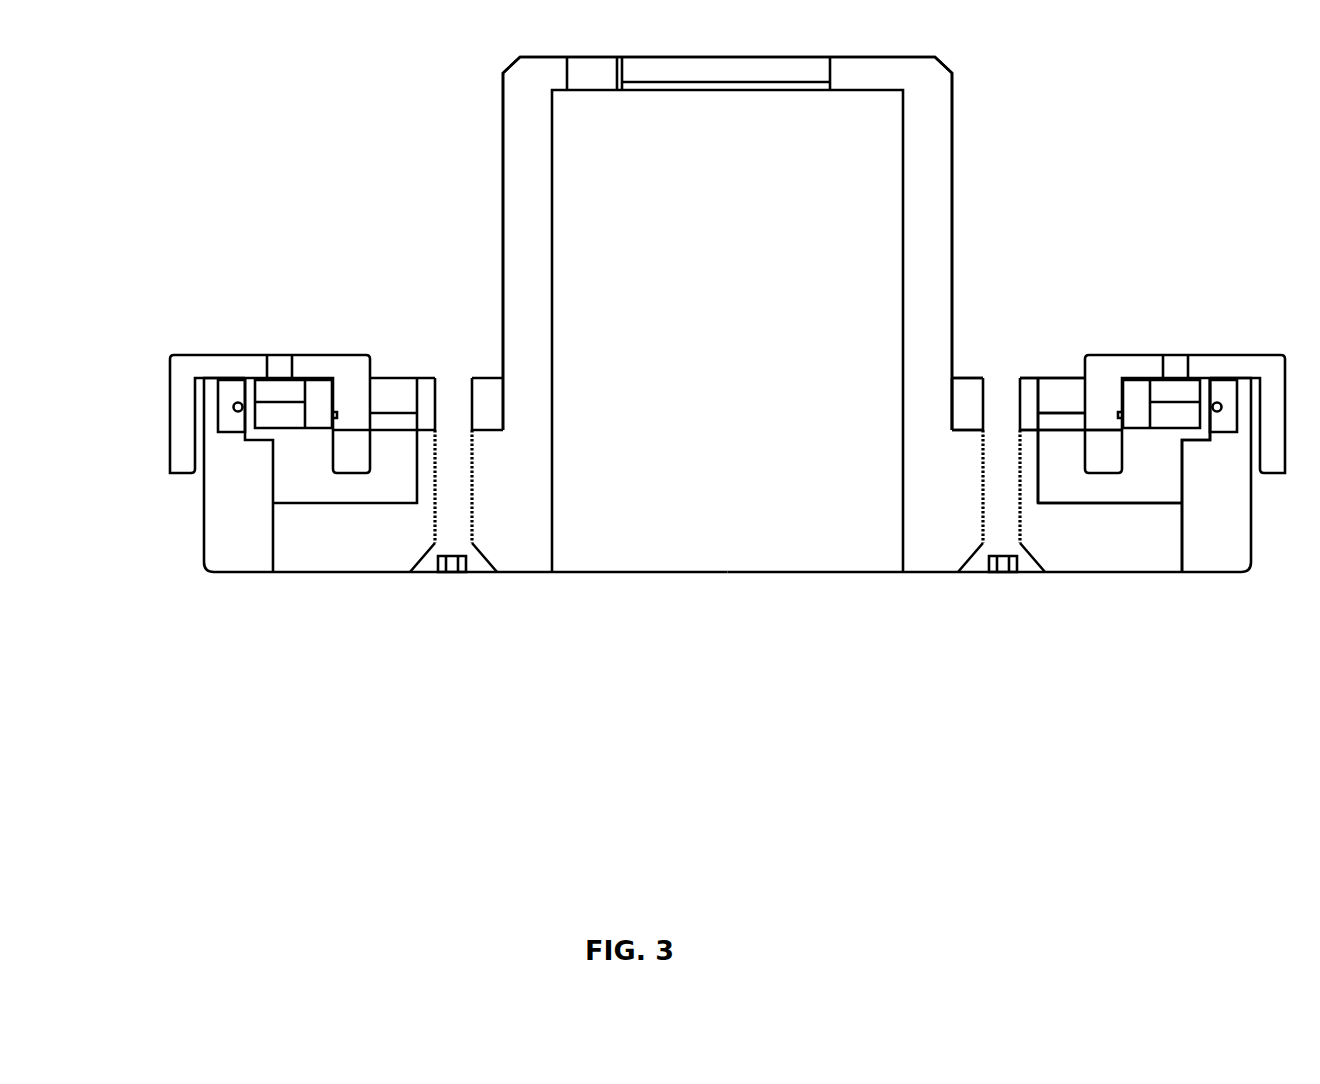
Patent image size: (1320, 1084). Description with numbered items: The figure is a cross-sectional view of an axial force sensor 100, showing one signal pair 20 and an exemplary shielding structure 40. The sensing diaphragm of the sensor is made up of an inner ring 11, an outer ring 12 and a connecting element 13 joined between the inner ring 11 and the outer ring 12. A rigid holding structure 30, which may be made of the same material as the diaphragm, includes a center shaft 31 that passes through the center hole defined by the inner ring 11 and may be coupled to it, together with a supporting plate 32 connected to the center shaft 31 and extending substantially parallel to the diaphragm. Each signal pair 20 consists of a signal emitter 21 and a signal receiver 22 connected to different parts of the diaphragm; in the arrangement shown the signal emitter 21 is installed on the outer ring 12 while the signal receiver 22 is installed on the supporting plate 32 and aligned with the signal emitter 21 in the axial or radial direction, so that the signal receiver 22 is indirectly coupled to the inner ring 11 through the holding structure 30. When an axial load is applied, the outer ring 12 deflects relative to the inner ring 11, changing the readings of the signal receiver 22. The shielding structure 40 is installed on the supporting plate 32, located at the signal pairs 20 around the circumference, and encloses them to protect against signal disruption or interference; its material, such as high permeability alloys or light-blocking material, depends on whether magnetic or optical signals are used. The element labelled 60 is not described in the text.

The axial force sensor 100 is at (1124, 86).
The inner ring 11 is at (968, 395).
The outer ring 12 is at (1140, 417).
The connecting element 13 is at (1062, 410).
The signal pair 20 is at (225, 270).
The signal emitter 21 is at (272, 395).
The signal receiver 22 is at (237, 393).
The holding structure 30 is at (505, 788).
The center shaft 31 is at (528, 298).
The supporting plate 32 is at (350, 545).
The shielding structure 40 is at (172, 375).
The base body 60 is at (237, 541).